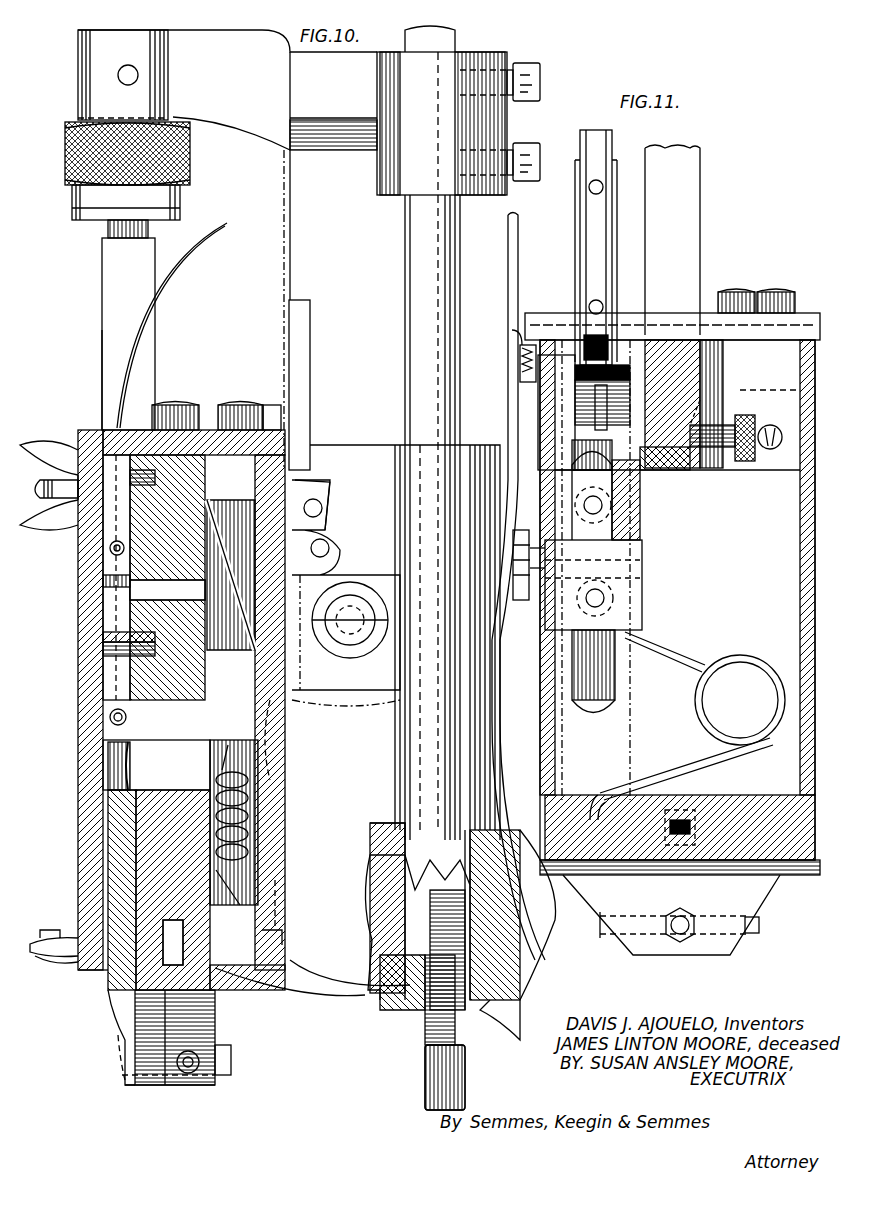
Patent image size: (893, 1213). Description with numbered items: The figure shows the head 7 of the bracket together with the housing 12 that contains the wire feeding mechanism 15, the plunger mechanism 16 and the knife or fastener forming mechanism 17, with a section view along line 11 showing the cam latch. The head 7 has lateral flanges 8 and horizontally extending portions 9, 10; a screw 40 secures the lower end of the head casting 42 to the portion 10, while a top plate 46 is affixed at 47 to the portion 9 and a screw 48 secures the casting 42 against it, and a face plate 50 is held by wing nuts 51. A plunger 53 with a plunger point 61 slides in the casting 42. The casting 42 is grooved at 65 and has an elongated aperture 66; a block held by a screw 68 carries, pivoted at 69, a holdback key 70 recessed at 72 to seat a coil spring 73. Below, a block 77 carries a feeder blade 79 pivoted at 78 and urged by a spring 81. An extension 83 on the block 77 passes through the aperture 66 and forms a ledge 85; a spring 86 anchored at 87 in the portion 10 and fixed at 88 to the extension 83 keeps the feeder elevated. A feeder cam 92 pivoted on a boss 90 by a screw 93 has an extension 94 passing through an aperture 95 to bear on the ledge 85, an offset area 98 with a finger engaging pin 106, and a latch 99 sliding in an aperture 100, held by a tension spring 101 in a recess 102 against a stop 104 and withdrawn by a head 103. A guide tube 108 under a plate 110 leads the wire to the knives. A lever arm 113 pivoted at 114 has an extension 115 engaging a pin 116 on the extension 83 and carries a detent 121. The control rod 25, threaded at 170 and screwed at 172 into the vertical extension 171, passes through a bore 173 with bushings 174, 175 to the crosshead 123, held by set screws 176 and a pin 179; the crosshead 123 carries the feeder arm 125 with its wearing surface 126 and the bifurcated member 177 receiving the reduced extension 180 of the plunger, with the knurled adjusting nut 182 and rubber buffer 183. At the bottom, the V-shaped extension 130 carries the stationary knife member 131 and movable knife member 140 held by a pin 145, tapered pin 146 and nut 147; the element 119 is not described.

In FIG. 10, the head 7 is at (340, 965).
In FIG. 11, the head 7 is at (670, 335).
In FIG. 11, the lateral flanges 8 is at (630, 320).
In FIG. 10, the horizontally extending portion 9 is at (208, 410).
In FIG. 10, the horizontally extending portion 10 is at (225, 968).
In FIG. 11, the horizontally extending portion 10 is at (795, 862).
In FIG. 10, the line 11— 11 is at (330, 430).
In FIG. 10, the housing 12 is at (73, 605).
In FIG. 10, the wire feeding mechanism 15 is at (126, 612).
In FIG. 10, the plunger mechanism 16 is at (97, 363).
In FIG. 11, the plunger mechanism 16 is at (704, 191).
In FIG. 10, the knife or fastener forming mechanism 17 is at (104, 1029).
In FIG. 10, the control rod 25 is at (425, 1083).
In FIG. 10, the screw 40 is at (292, 935).
In FIG. 11, the screw 40 is at (675, 850).
In FIG. 10, the head casting 42 is at (170, 866).
In FIG. 11, the head casting 42 is at (553, 676).
In FIG. 10, the top plate 46 is at (270, 408).
In FIG. 11, the top plate 46 is at (704, 313).
In FIG. 10, the fastening of top plate 47 is at (243, 405).
In FIG. 11, the fastening of top plate 47 is at (776, 292).
In FIG. 10, the screw 48 is at (178, 405).
In FIG. 11, the screw 48 is at (738, 292).
In FIG. 10, the face plate 50 is at (82, 655).
In FIG. 10, the wing nuts 51 is at (58, 432).
In FIG. 10, the plunger 53 is at (112, 311).
In FIG. 11, the plunger 53 is at (690, 233).
In FIG. 10, the plunger point 61 is at (135, 497).
In FIG. 10, the groove 65 is at (115, 668).
In FIG. 10, the elongated aperture 66 is at (170, 768).
In FIG. 11, the elongated aperture 66 is at (575, 703).
In FIG. 10, the screw 68 is at (167, 577).
In FIG. 10, the pivot 69 is at (142, 440).
In FIG. 10, the holdback key 70 is at (110, 579).
In FIG. 10, the recess 72 is at (110, 563).
In FIG. 10, the coil spring 73 is at (108, 556).
In FIG. 10, the block 77 is at (112, 692).
In FIG. 10, the pivot 78 is at (105, 640).
In FIG. 10, the feeder blade 79 is at (130, 680).
In FIG. 10, the spring 81 is at (110, 719).
In FIG. 10, the extension 83 is at (280, 708).
In FIG. 11, the extension 83 is at (640, 565).
In FIG. 10, the ledge 85 is at (236, 690).
In FIG. 10, the spring 86 is at (262, 820).
In FIG. 11, the spring 86 is at (757, 665).
In FIG. 10, the spring anchorage 87 is at (290, 905).
In FIG. 11, the spring anchorage 87 is at (584, 792).
In FIG. 10, the spring fixing 88 is at (282, 733).
In FIG. 11, the spring fixing 88 is at (642, 612).
In FIG. 10, the boss 90 is at (366, 692).
In FIG. 10, the feeder cam 92 is at (375, 658).
In FIG. 11, the feeder cam 92 is at (640, 530).
In FIG. 10, the screw 93 is at (372, 612).
In FIG. 10, the extension 94 is at (318, 590).
In FIG. 11, the aperture 95 is at (570, 350).
In FIG. 10, the offset area 98 is at (325, 492).
In FIG. 11, the offset area 98 is at (625, 378).
In FIG. 10, the latch 99 is at (329, 548).
In FIG. 11, the latch 99 is at (655, 475).
In FIG. 11, the aperture 100 is at (680, 475).
In FIG. 11, the tension spring 101 is at (722, 472).
In FIG. 11, the recess 102 is at (728, 410).
In FIG. 11, the head 103 is at (748, 412).
In FIG. 11, the stop 104 is at (775, 447).
In FIG. 10, the finger engaging pin 106 is at (322, 508).
In FIG. 11, the finger engaging pin 106 is at (595, 405).
In FIG. 10, the guide tube 108 is at (110, 763).
In FIG. 10, the plate 110 is at (108, 836).
In FIG. 10, the lever arm 113 is at (508, 268).
In FIG. 10, the pivot 114 is at (522, 600).
In FIG. 11, the extension 115 is at (545, 548).
In FIG. 11, the pin 116 is at (545, 568).
In FIG. 10, the spring housing 119 is at (520, 380).
In FIG. 10, the detent 121 is at (512, 328).
In FIG. 10, the crosshead 123 is at (252, 128).
In FIG. 10, the feeder arm 125 is at (290, 205).
In FIG. 11, the feeder arm 125 is at (612, 135).
In FIG. 10, the hardened wearing surface 126 is at (290, 320).
In FIG. 11, the hardened wearing surface 126 is at (578, 204).
In FIG. 10, the V-shaped extension 130 is at (228, 1015).
In FIG. 11, the V-shaped extension 130 is at (740, 948).
In FIG. 10, the stationary knife member 131 is at (158, 1087).
In FIG. 10, the movable knife member 140 is at (116, 1038).
In FIG. 10, the pin 145 is at (122, 1076).
In FIG. 11, the pin 145 is at (672, 906).
In FIG. 10, the tapered pin 146 is at (190, 1074).
In FIG. 11, the tapered pin 146 is at (759, 925).
In FIG. 10, the nut 147 is at (240, 1074).
In FIG. 11, the nut 147 is at (694, 912).
In FIG. 10, the threaded end 170 is at (428, 1038).
In FIG. 10, the vertical extension 171 is at (458, 238).
In FIG. 10, the threaded connection 172 is at (415, 975).
In FIG. 11, the bore 173 is at (565, 855).
In FIG. 10, the bushing 174 is at (402, 450).
In FIG. 10, the bushing 175 is at (480, 950).
In FIG. 10, the set screws 176 is at (528, 135).
In FIG. 10, the bifurcated member 177 is at (80, 62).
In FIG. 10, the pin 179 is at (122, 79).
In FIG. 10, the reduced extension 180 is at (110, 229).
In FIG. 10, the knurled adjusting nut 182 is at (70, 158).
In FIG. 10, the rubber buffer 183 is at (76, 208).